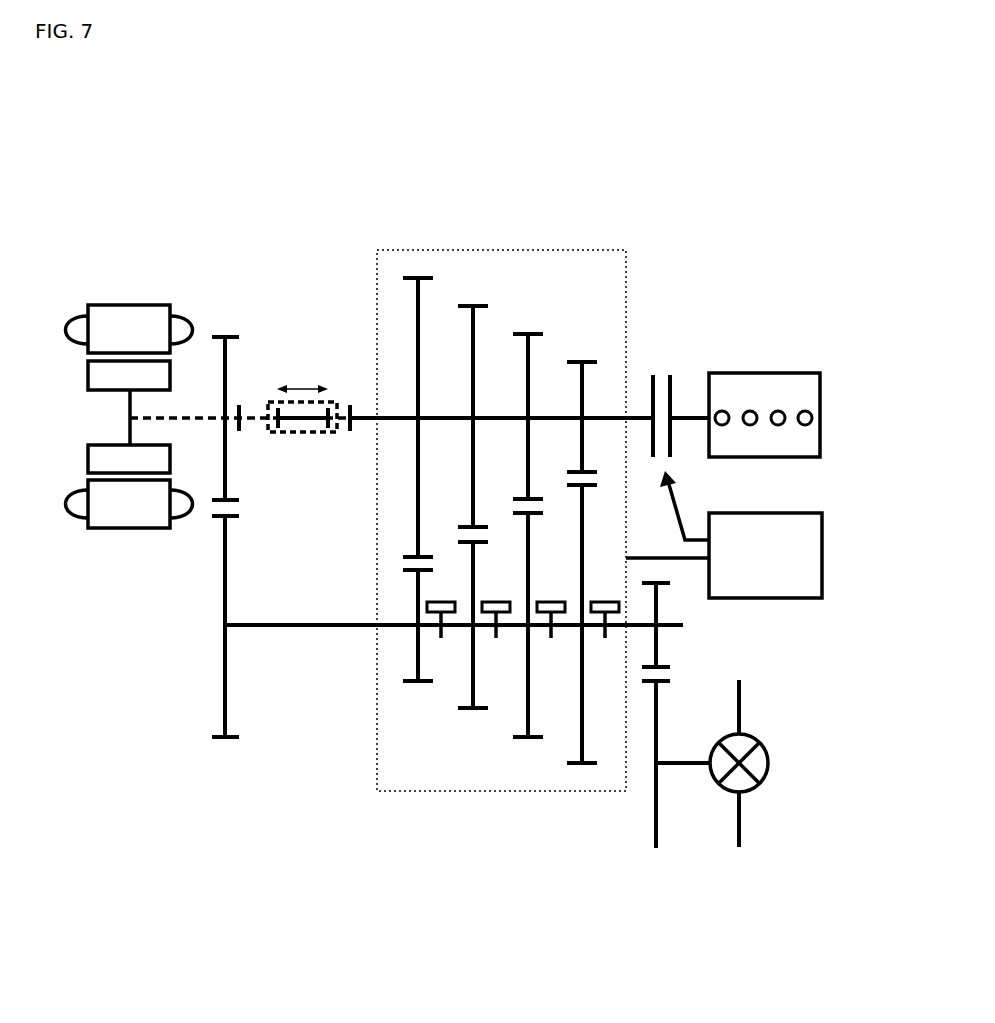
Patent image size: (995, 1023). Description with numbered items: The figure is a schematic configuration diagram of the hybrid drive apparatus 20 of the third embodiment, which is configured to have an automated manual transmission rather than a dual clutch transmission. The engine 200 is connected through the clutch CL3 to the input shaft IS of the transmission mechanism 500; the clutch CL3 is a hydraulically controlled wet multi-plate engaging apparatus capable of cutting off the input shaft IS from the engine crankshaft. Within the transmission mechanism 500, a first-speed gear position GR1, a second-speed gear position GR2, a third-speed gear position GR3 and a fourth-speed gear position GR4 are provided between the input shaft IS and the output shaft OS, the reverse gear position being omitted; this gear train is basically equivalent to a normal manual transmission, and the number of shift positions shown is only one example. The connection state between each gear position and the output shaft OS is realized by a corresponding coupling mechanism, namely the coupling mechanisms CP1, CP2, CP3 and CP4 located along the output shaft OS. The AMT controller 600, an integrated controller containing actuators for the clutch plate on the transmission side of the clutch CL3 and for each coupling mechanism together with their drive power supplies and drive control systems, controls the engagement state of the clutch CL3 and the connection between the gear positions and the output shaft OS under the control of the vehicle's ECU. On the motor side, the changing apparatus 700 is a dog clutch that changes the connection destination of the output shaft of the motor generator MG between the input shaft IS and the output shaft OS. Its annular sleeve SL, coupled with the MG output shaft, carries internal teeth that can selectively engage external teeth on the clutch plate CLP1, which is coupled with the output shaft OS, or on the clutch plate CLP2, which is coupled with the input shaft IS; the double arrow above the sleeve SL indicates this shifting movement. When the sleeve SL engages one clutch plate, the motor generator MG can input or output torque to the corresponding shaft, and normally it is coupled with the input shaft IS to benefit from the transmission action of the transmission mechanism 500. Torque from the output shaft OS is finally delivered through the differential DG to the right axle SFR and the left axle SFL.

The hybrid drive apparatus 20 is at (792, 167).
The motor generator MG is at (68, 300).
The changing apparatus 700 is at (302, 370).
The sleeve SL is at (302, 429).
The clutch plate CLP1 is at (240, 432).
The clutch plate CLP2 is at (350, 433).
The input shaft IS is at (637, 422).
The transmission mechanism 500 is at (626, 250).
The first-speed gear position GR1 is at (395, 266).
The second-speed gear position GR2 is at (466, 291).
The third-speed gear position GR3 is at (525, 321).
The fourth-speed gear position GR4 is at (579, 351).
The coupling mechanism CP1 is at (441, 610).
The coupling mechanism CP2 is at (496, 610).
The coupling mechanism CP3 is at (551, 610).
The coupling mechanism CP4 is at (605, 610).
The output shaft OS is at (350, 628).
The clutch CL3 is at (661, 406).
The engine 200 is at (820, 373).
The AMT controller 600 is at (822, 513).
The differential DG is at (768, 757).
The right axle SFR is at (754, 699).
The left axle SFL is at (754, 827).